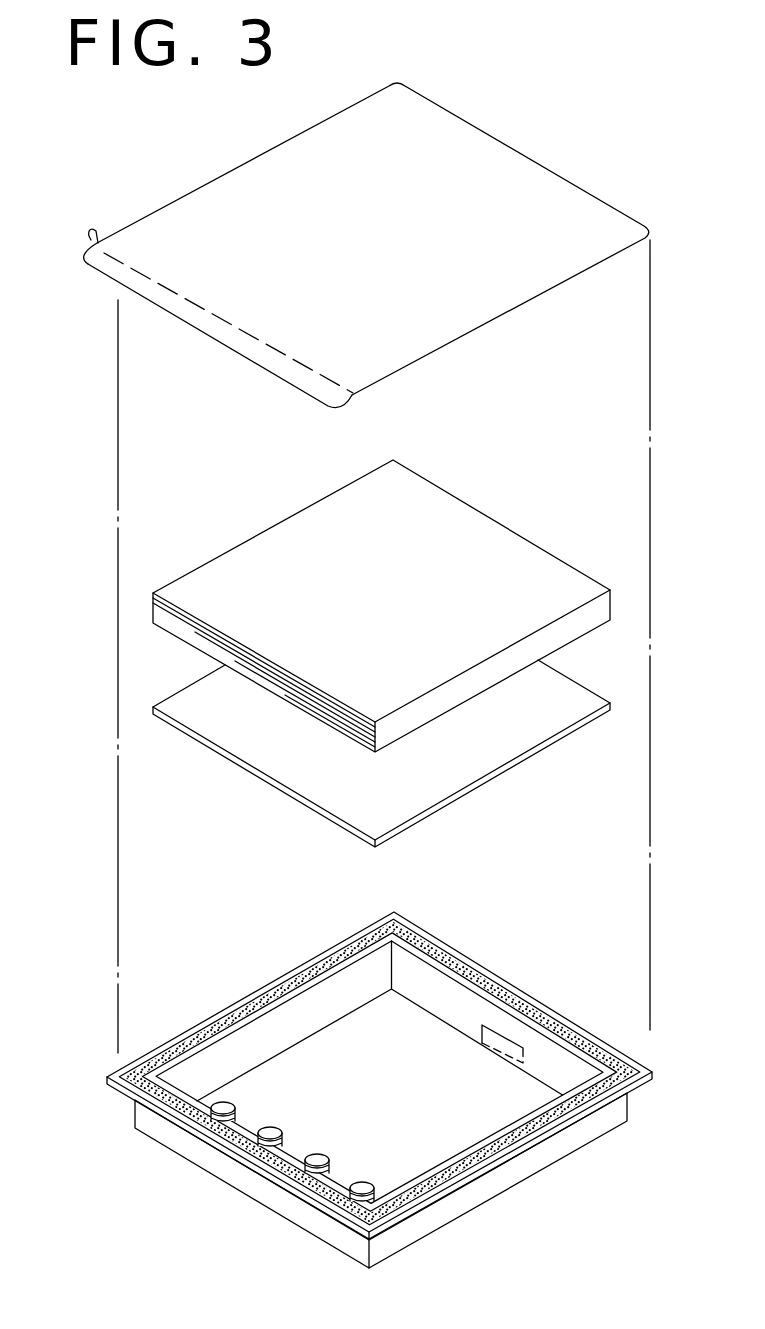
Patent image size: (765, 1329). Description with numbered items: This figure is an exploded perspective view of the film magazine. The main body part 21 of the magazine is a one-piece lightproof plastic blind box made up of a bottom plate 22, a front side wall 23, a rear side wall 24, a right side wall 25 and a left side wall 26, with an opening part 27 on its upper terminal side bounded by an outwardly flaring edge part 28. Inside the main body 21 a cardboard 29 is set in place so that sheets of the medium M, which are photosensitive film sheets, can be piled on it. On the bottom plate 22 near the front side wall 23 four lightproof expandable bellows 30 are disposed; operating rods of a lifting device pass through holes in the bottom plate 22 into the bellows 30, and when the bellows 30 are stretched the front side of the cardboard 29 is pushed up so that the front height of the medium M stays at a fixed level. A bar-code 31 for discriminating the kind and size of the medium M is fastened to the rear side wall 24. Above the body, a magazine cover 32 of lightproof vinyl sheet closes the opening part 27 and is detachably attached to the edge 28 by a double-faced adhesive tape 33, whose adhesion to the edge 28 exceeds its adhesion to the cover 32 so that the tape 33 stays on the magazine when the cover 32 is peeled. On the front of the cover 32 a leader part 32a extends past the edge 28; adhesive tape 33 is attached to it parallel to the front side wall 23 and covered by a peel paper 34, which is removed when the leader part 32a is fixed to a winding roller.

The main body part of the magazine 21 is at (567, 982).
The bottom plate 22 is at (442, 1147).
The front side wall 23 is at (252, 1188).
The rear side wall 24 is at (495, 1017).
The right side wall 25 is at (523, 1170).
The left side wall 26 is at (222, 1053).
The opening part 27 is at (260, 1023).
The edge part 28 is at (590, 1028).
The cardboard 29 is at (547, 725).
The lightproof expandable bellows 30 is at (272, 1127).
The bar-code 31 is at (497, 1060).
The magazine cover 32 is at (548, 282).
The leader part 32a is at (263, 366).
The double-faced adhesive tape 33 is at (193, 305).
The peel paper 34 is at (90, 229).
The medium M is at (178, 632).